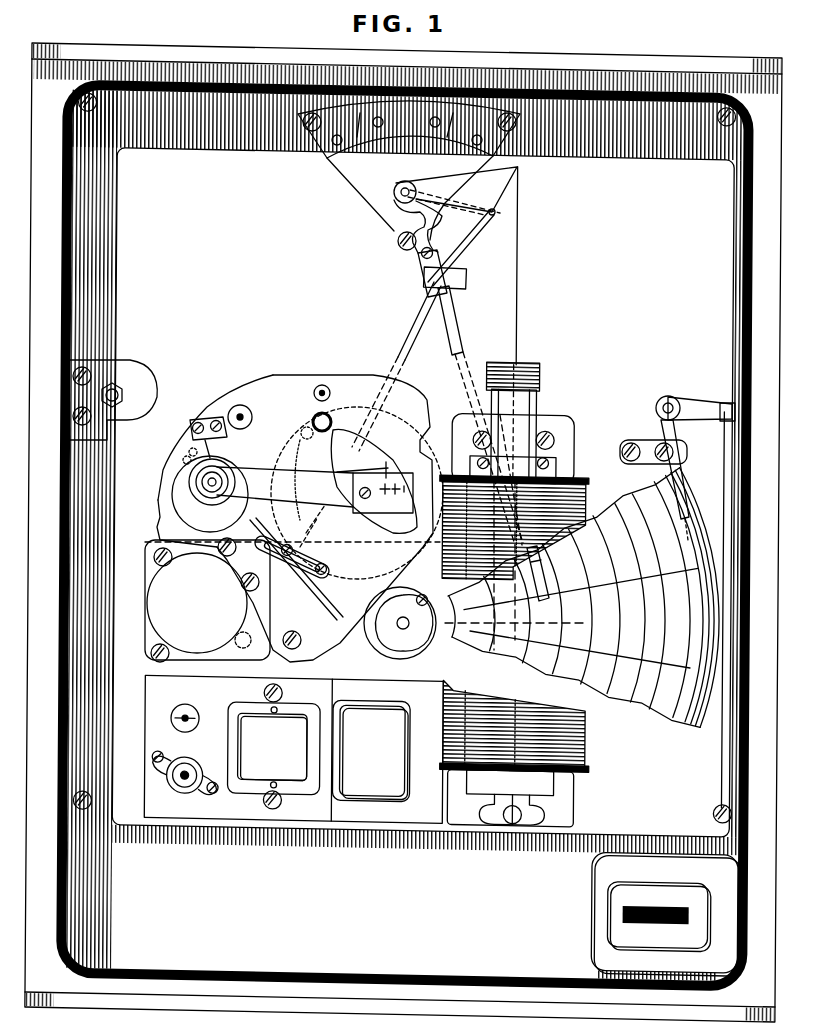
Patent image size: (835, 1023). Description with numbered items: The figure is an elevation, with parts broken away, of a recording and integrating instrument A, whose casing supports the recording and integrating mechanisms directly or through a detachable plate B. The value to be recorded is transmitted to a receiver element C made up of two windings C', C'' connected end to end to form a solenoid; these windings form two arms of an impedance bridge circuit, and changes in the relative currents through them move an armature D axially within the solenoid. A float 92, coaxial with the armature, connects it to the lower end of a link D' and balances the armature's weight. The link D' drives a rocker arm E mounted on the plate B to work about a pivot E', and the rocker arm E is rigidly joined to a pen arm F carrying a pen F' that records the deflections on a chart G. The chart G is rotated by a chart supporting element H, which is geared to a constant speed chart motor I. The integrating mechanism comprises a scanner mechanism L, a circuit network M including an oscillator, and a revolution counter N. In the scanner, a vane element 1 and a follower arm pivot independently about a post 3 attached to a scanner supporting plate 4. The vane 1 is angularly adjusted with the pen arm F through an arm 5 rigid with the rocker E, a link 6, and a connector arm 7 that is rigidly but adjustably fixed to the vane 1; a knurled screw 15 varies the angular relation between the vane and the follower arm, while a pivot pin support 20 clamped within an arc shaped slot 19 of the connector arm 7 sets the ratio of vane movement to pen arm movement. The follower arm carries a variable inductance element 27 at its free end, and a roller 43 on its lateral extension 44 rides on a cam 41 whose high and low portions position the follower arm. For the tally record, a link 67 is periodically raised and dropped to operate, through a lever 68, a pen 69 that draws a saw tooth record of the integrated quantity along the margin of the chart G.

The recording instrument A is at (149, 57).
The detachable plate B is at (231, 241).
The receiver element C is at (560, 595).
The winding C' is at (528, 726).
The winding C'' is at (527, 521).
The armature D is at (527, 571).
The link D' is at (537, 266).
The rocker arm E is at (409, 199).
The pivot E' is at (390, 182).
The pen arm F is at (472, 404).
The pen F' is at (571, 578).
The chart G is at (643, 703).
The chart supporting element H is at (380, 631).
The chart motor I is at (170, 603).
The scanner mechanism L is at (124, 497).
The circuit network M is at (136, 731).
The revolution counter N is at (592, 902).
The vane element 1 is at (367, 548).
The post 3 is at (150, 500).
The scanner supporting plate 4 is at (349, 372).
The arm 5 is at (462, 207).
The link 6 is at (411, 327).
The connector arm 7 is at (303, 580).
The screw 15 is at (230, 517).
The arc shaped slot 19 is at (283, 545).
The pivot pin support 20 is at (286, 556).
The variable inductance element 27 is at (408, 460).
The cam 41 is at (380, 443).
The roller 43 is at (306, 427).
The lateral extension 44 is at (300, 446).
The link 67 is at (724, 758).
The lever 68 is at (704, 406).
The pen 69 is at (683, 498).
The float 92 is at (505, 408).